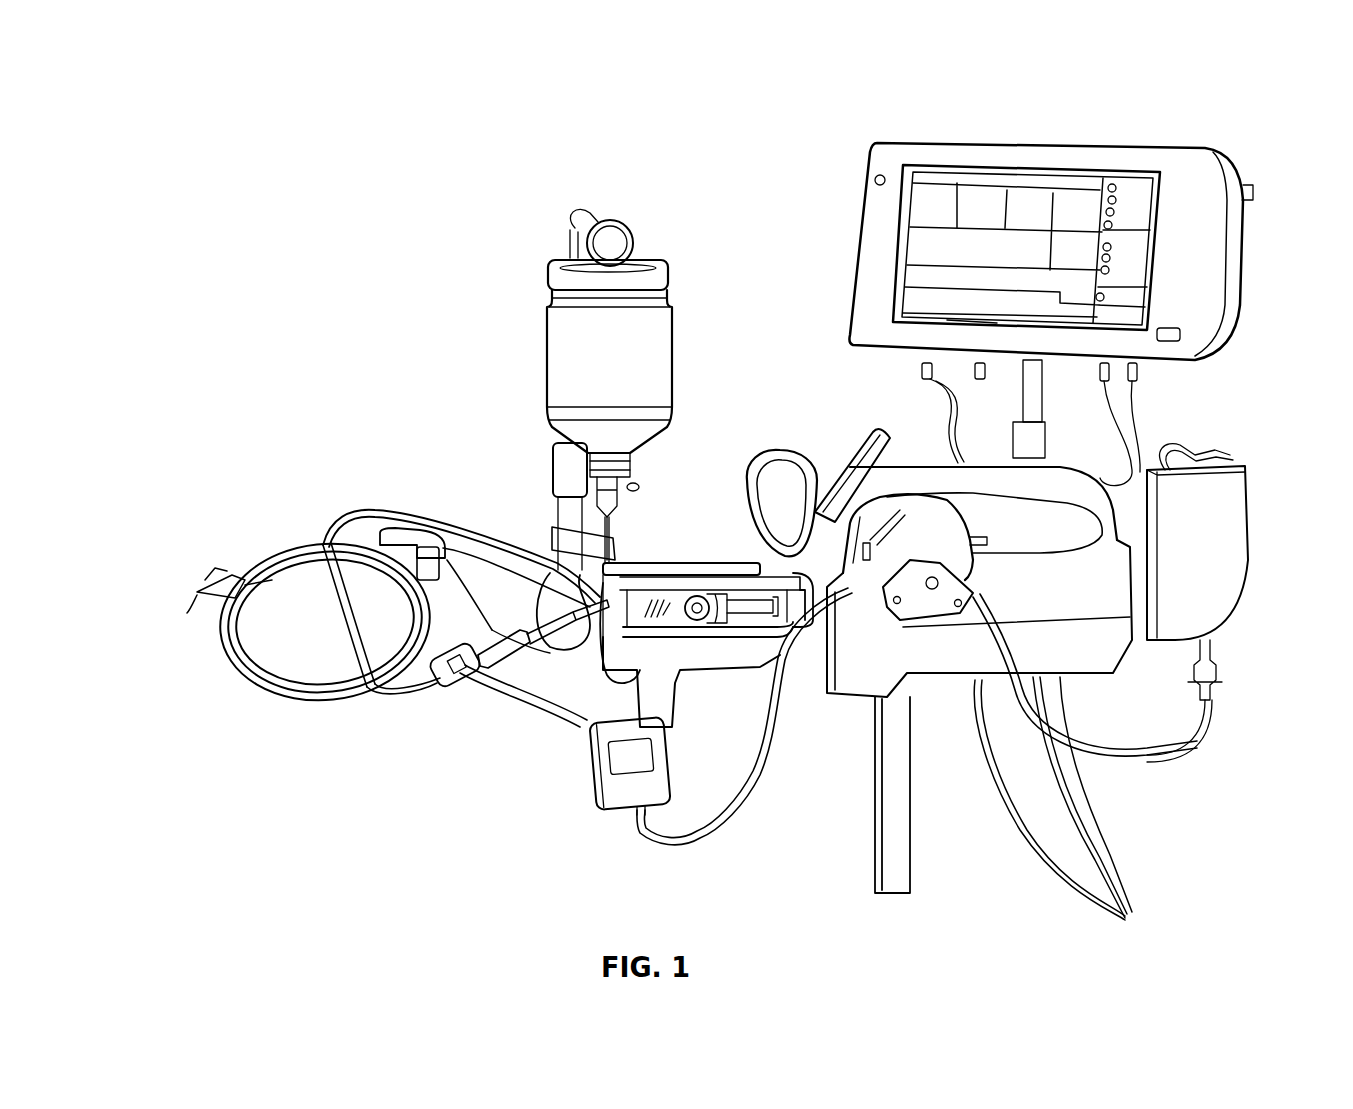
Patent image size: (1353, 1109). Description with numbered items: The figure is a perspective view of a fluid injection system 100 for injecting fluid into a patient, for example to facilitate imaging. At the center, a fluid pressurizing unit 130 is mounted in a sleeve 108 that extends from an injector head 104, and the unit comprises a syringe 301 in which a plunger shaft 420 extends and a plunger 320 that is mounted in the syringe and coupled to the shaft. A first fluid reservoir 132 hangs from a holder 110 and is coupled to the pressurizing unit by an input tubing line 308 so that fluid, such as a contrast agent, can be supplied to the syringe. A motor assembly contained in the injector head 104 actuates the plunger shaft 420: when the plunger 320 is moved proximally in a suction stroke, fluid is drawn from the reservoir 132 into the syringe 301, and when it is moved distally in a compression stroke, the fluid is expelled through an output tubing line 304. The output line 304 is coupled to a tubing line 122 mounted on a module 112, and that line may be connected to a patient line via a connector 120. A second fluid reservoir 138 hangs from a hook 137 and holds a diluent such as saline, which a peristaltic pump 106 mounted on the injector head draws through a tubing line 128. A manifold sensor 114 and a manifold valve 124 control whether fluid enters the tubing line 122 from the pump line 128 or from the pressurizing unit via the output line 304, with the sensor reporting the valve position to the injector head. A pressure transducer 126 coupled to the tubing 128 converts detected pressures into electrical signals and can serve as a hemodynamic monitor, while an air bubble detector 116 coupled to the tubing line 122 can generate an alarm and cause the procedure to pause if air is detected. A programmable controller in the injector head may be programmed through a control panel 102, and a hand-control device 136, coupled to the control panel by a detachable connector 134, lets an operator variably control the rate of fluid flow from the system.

The fluid injection system 100 is at (333, 232).
The control panel 102 is at (1027, 143).
The injector head 104 is at (918, 473).
The peristaltic pump 106 is at (945, 522).
The sleeve 108 is at (700, 642).
The holder 110 is at (574, 212).
The module 112 is at (330, 505).
The manifold sensor 114 is at (437, 692).
The air bubble detector 116 is at (412, 538).
The connector 120 is at (190, 572).
The tubing line 122 is at (477, 555).
The manifold valve 124 is at (497, 673).
The pressure transducer 126 is at (588, 808).
The tubing line 128 is at (583, 717).
The fluid pressurizing unit 130 is at (692, 563).
The first fluid reservoir 132 is at (557, 378).
The connector 134 is at (1152, 390).
The hand-control device 136 is at (848, 442).
The hook 137 is at (1238, 440).
The second fluid reservoir 138 is at (1232, 583).
The syringe 301 is at (646, 600).
The output tubing line 304 is at (550, 653).
The input tubing line 308 is at (603, 532).
The plunger 320 is at (718, 626).
The plunger shaft 420 is at (741, 600).